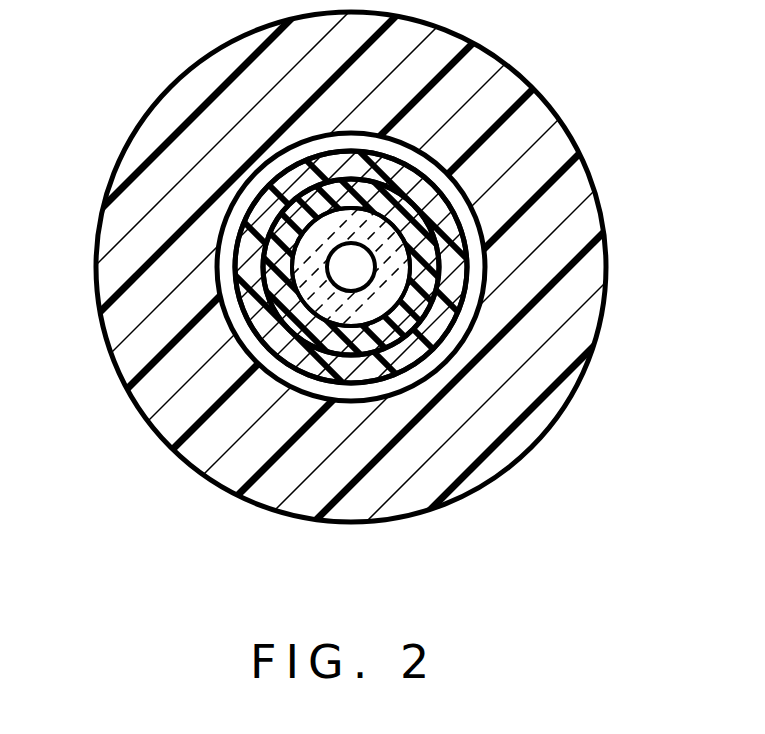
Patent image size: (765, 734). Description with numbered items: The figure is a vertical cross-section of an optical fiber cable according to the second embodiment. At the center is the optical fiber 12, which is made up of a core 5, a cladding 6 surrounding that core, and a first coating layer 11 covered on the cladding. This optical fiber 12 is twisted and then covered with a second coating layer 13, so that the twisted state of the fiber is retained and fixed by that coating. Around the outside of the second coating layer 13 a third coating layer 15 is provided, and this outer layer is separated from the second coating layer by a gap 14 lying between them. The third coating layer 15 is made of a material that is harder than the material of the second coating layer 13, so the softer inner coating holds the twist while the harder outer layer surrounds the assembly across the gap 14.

The core 5 is at (362, 268).
The cladding 6 is at (385, 240).
The first coating layer 11 is at (420, 298).
The optical fiber 12 is at (417, 190).
The second coating layer 13 is at (427, 347).
The gap 14 is at (260, 362).
The third coating layer 15 is at (150, 121).